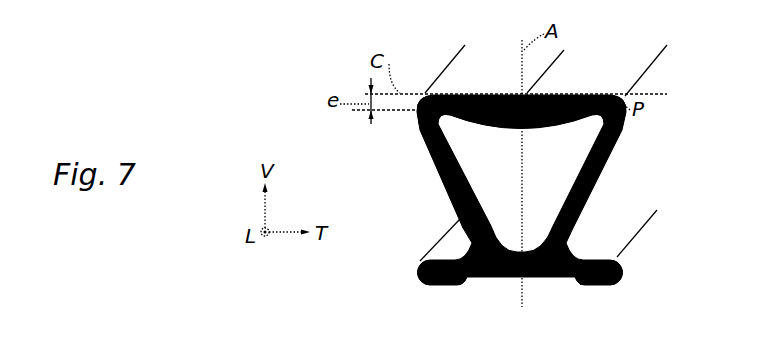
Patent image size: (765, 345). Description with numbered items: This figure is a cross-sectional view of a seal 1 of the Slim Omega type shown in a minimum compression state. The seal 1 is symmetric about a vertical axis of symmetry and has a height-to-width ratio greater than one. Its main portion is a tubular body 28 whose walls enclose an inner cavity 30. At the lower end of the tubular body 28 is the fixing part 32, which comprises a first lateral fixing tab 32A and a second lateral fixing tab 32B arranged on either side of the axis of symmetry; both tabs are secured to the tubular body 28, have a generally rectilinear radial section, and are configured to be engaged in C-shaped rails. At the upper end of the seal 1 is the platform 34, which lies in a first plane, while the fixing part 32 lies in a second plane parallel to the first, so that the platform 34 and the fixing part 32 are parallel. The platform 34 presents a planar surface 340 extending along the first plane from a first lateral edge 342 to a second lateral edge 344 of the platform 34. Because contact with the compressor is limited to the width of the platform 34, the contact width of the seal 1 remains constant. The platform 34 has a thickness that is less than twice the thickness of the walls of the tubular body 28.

The seal 1 is at (626, 143).
The tubular body 28 is at (592, 192).
The inner cavity 30 is at (470, 156).
The fixing part 32 is at (580, 298).
The first lateral fixing tab 32A is at (438, 285).
The second lateral fixing tab 32B is at (608, 286).
The platform 34 is at (573, 90).
The planar surface 340 is at (571, 76).
The first lateral edge 342 is at (447, 92).
The second lateral edge 344 is at (600, 95).